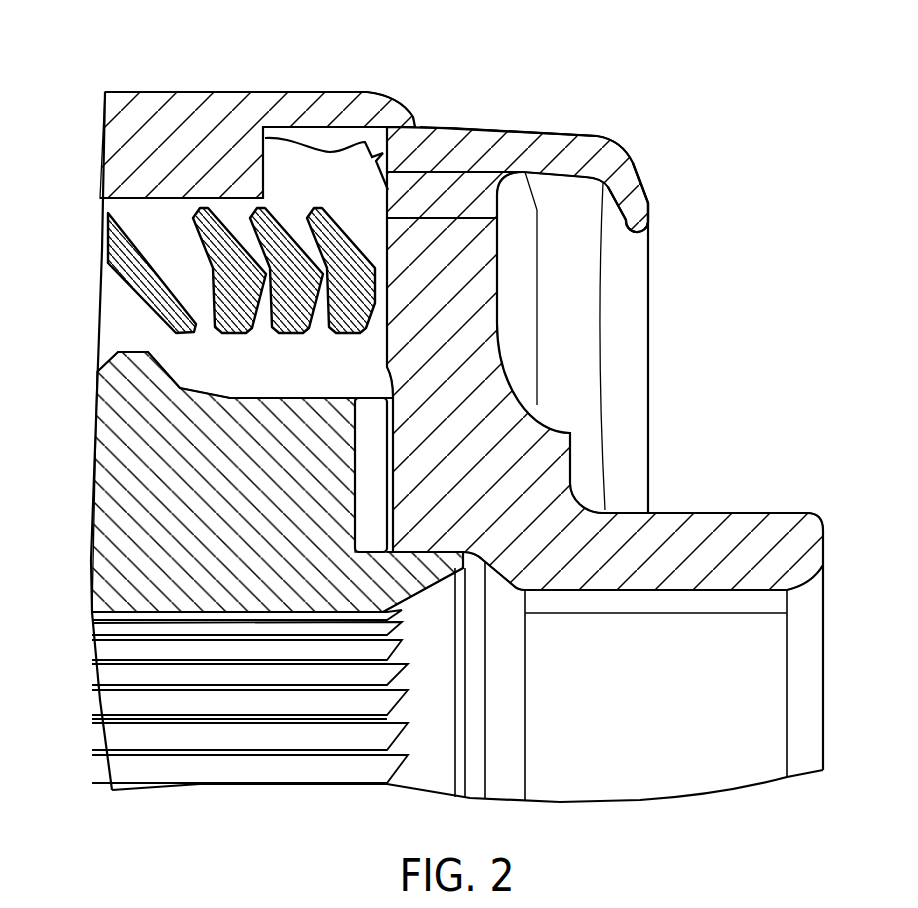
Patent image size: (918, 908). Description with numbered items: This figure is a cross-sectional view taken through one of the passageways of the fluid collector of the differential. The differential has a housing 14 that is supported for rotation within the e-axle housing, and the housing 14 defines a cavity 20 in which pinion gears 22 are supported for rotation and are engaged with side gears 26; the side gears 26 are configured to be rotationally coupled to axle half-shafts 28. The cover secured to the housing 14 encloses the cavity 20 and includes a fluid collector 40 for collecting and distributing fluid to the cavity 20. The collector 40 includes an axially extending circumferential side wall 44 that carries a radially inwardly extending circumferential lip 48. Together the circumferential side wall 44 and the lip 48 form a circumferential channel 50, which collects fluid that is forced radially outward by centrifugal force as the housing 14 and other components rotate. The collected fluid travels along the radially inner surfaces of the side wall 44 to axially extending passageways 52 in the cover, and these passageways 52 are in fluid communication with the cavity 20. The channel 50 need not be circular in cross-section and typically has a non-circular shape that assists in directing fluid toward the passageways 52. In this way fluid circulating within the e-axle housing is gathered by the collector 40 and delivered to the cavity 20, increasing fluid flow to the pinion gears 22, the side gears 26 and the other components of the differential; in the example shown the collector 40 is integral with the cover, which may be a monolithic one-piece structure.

The housing 14 is at (242, 97).
The cavity 20 is at (323, 138).
The pinion gears 22 is at (137, 255).
The side gears 26 is at (137, 507).
The axle half-shafts 28 is at (730, 539).
The fluid collector 40 is at (579, 127).
The circumferential side wall 44 is at (474, 137).
The circumferential lip 48 is at (643, 202).
The circumferential channel 50 is at (564, 278).
The axially extending passageways 52 is at (425, 188).